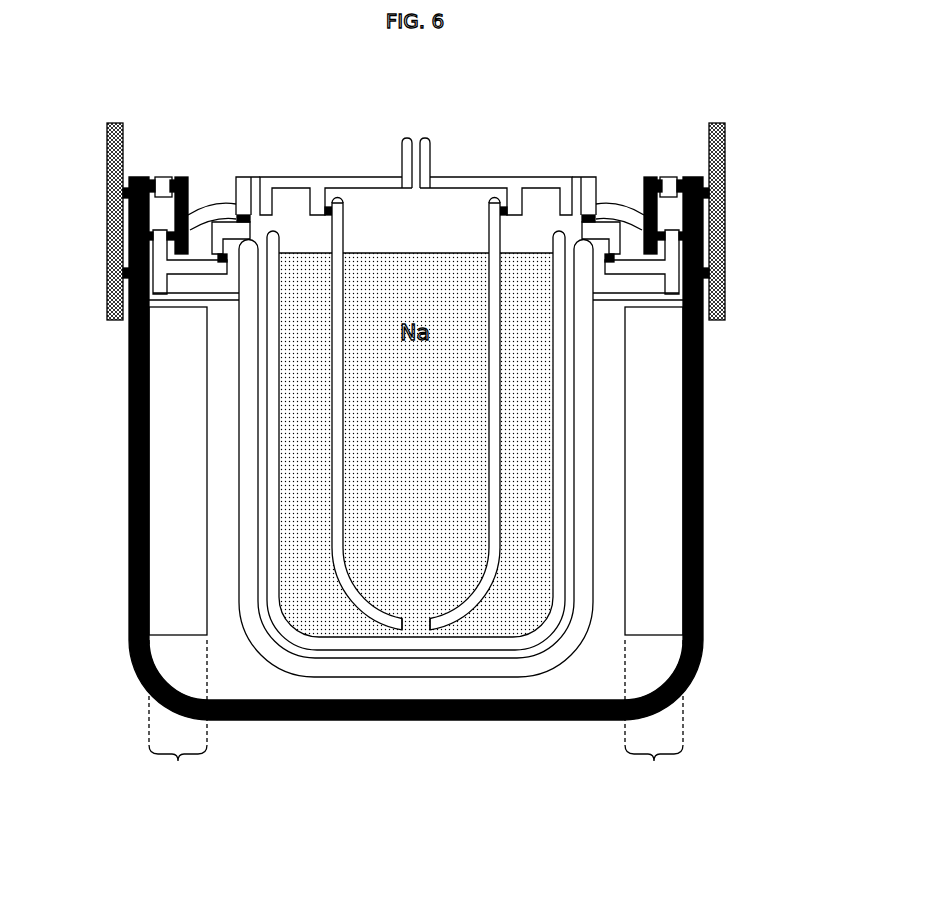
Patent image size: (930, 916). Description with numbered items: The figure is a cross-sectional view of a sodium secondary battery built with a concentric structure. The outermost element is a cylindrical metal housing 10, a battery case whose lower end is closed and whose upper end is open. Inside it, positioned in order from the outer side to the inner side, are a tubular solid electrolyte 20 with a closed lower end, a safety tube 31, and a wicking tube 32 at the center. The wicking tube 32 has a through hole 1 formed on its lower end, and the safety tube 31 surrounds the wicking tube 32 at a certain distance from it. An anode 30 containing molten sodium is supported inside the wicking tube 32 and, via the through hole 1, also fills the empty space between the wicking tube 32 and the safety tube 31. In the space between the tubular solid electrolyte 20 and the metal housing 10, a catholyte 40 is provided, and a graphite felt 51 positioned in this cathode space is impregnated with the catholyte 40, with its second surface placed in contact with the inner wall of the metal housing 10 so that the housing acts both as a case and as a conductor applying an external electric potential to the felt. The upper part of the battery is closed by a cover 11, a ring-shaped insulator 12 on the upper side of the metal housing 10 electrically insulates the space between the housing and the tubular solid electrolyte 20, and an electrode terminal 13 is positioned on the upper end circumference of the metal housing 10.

The through hole 1 is at (416, 622).
The metal housing 10 is at (130, 545).
The cover 11 is at (352, 177).
The insulator 12 is at (232, 207).
The electrode terminal 13 is at (108, 210).
The tubular solid electrolyte 20 is at (250, 480).
The anode 30 is at (465, 365).
The safety tube 31 is at (560, 460).
The wicking tube 32 is at (497, 430).
The catholyte 40 is at (548, 690).
The graphite felt 51 is at (165, 600).